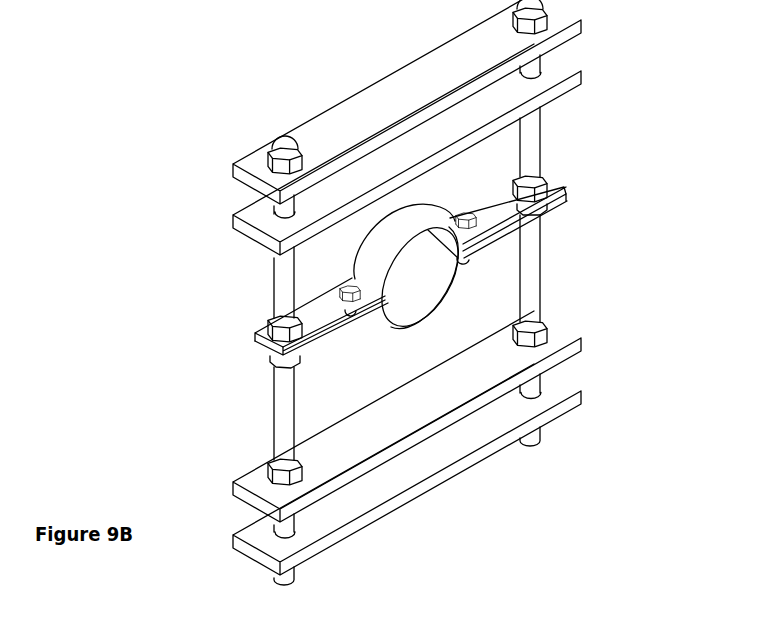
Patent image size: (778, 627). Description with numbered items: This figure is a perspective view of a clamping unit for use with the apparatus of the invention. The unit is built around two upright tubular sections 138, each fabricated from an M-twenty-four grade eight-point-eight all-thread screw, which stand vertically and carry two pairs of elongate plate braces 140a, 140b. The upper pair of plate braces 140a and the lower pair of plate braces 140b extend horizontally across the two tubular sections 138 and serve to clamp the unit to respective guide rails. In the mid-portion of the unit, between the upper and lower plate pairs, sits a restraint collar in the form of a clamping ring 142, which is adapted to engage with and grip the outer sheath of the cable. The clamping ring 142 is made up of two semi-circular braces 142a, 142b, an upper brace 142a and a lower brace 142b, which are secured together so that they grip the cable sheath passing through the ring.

The upright tubular section 138 is at (546, 133).
The elongate plate braces 140a is at (584, 65).
The elongate plate braces 140b is at (582, 387).
The clamping ring 142 is at (449, 262).
The semi-circular brace 142a is at (569, 180).
The semi-circular brace 142b is at (570, 205).